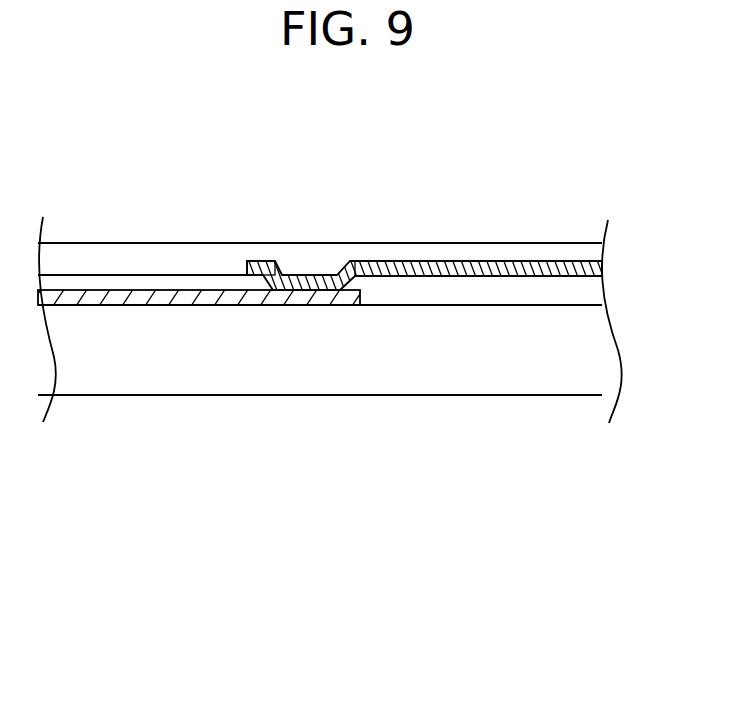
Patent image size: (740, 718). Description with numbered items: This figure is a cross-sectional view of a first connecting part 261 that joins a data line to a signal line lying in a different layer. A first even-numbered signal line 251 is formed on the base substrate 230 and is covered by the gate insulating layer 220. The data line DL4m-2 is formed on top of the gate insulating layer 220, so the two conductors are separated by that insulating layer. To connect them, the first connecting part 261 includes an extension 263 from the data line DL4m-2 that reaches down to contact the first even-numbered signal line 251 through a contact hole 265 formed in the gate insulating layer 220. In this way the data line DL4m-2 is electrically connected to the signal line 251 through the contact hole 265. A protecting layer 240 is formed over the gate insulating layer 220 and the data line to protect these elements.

The gate insulating layer 220 is at (500, 285).
The base substrate 230 is at (565, 355).
The protecting layer 240 is at (95, 257).
The first even-numbered signal line 251 is at (185, 297).
The first connecting part 261 is at (306, 266).
The extension 263 is at (293, 270).
The contact hole 265 is at (337, 250).
The (4m-2)-th data line DL4m-2 is at (412, 265).